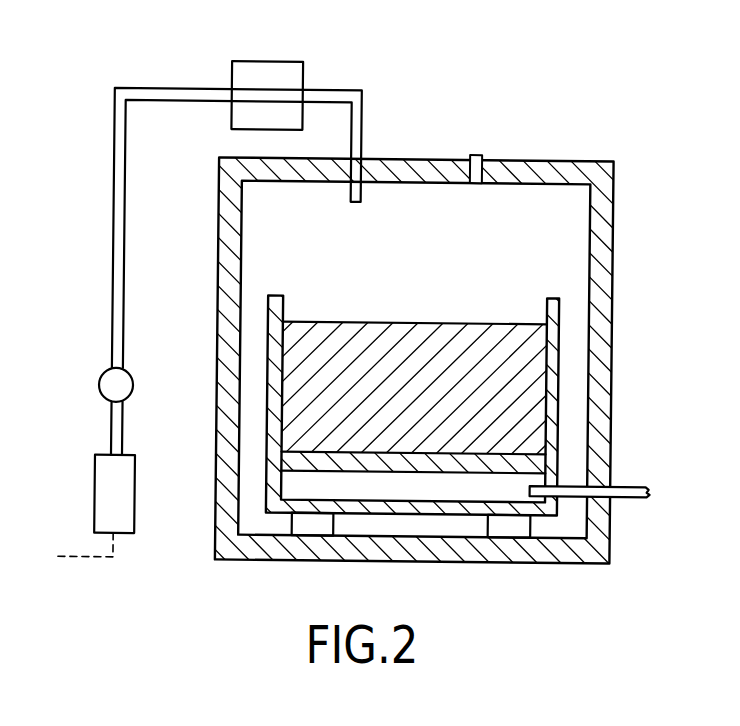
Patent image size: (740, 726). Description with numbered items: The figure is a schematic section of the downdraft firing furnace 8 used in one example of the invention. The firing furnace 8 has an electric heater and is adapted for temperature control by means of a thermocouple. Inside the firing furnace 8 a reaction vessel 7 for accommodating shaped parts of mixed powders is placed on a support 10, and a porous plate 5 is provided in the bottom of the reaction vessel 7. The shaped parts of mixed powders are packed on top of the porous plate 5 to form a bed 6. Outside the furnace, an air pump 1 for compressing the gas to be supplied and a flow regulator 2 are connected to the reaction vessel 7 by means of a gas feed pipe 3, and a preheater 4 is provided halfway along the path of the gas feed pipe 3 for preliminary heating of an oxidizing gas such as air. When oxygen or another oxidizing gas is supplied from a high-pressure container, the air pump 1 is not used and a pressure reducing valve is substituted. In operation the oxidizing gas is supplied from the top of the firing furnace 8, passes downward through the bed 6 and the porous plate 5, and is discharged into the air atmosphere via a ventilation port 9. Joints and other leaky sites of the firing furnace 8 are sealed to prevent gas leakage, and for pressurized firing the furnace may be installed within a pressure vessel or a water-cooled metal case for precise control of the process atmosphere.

The air pump 1 is at (96, 486).
The flow regulator 2 is at (108, 396).
The gas feed pipe 3 is at (114, 186).
The preheater 4 is at (265, 62).
The porous plate 5 is at (301, 474).
The bed 6 is at (481, 329).
The reaction vessel 7 is at (558, 410).
The firing furnace 8 is at (606, 231).
The ventilation port 9 is at (638, 484).
The support 10 is at (517, 529).